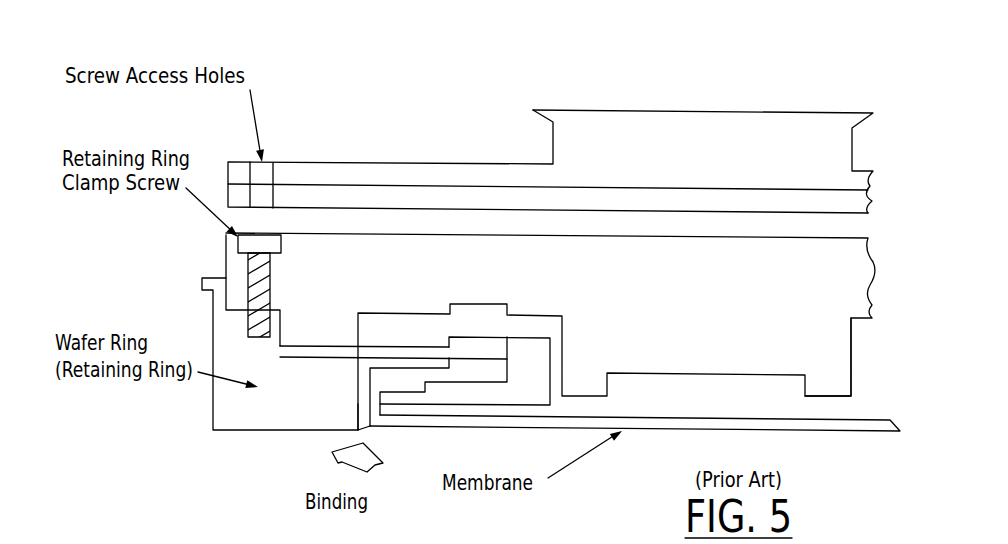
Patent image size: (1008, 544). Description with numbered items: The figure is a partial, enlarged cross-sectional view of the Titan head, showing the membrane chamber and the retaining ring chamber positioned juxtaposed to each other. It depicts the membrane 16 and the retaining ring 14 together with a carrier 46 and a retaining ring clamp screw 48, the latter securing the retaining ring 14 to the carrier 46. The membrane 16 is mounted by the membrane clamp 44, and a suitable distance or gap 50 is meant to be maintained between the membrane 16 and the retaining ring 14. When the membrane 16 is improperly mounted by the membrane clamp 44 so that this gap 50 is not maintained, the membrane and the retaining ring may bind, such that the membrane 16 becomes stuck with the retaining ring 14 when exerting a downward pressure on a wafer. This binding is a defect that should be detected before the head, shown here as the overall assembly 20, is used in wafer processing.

The carrier head assembly 20 is at (702, 73).
The retaining ring clamp screw 48 is at (248, 273).
The retaining ring 14 is at (227, 327).
The membrane clamp 44 is at (482, 365).
The membrane 16 is at (647, 425).
The carrier 46 is at (832, 382).
The gap 50 is at (362, 408).